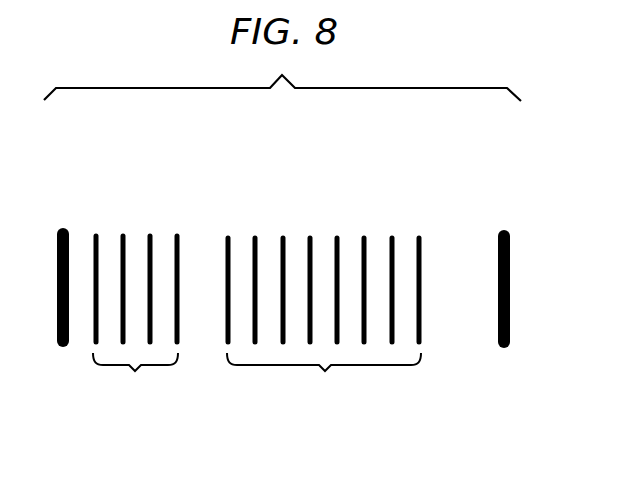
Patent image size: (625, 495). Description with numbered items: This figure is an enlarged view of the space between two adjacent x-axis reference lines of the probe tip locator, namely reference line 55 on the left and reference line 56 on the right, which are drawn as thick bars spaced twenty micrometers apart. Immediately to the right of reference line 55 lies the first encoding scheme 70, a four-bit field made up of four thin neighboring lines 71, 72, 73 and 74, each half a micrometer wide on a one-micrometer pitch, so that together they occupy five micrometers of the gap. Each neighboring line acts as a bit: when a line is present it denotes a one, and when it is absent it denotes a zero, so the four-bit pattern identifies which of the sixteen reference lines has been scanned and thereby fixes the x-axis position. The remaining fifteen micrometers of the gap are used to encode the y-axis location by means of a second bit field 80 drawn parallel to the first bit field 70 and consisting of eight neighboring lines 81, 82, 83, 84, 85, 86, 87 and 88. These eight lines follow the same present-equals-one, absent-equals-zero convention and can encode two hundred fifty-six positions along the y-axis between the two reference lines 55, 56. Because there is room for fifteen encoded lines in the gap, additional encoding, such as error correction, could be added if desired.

The reference line 55 is at (63, 348).
The reference line 56 is at (504, 349).
The first encoding scheme 70 is at (135, 378).
The neighboring line 71 is at (96, 232).
The neighboring line 72 is at (123, 232).
The neighboring line 73 is at (150, 232).
The neighboring line 74 is at (177, 232).
The second bit field 80 is at (324, 378).
The neighboring line 81 is at (228, 234).
The neighboring line 82 is at (255, 234).
The neighboring line 83 is at (283, 234).
The neighboring line 84 is at (310, 234).
The neighboring line 85 is at (337, 234).
The neighboring line 86 is at (364, 234).
The neighboring line 87 is at (392, 234).
The neighboring line 88 is at (419, 234).